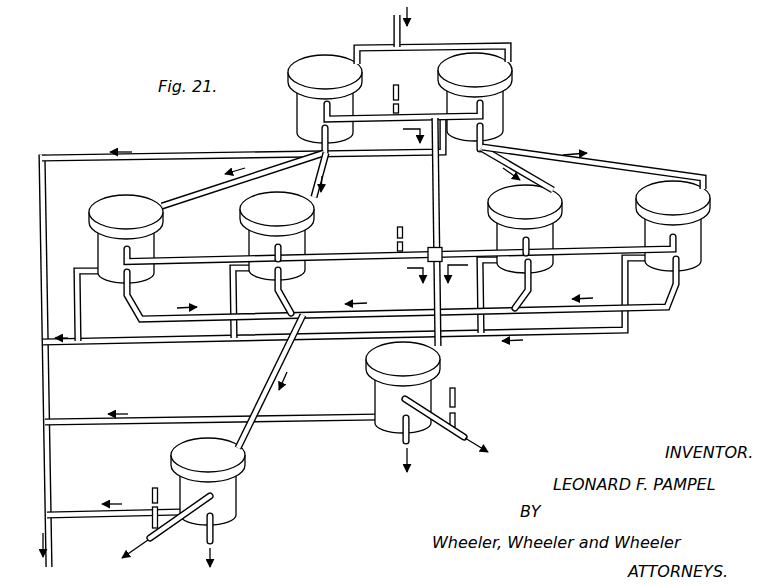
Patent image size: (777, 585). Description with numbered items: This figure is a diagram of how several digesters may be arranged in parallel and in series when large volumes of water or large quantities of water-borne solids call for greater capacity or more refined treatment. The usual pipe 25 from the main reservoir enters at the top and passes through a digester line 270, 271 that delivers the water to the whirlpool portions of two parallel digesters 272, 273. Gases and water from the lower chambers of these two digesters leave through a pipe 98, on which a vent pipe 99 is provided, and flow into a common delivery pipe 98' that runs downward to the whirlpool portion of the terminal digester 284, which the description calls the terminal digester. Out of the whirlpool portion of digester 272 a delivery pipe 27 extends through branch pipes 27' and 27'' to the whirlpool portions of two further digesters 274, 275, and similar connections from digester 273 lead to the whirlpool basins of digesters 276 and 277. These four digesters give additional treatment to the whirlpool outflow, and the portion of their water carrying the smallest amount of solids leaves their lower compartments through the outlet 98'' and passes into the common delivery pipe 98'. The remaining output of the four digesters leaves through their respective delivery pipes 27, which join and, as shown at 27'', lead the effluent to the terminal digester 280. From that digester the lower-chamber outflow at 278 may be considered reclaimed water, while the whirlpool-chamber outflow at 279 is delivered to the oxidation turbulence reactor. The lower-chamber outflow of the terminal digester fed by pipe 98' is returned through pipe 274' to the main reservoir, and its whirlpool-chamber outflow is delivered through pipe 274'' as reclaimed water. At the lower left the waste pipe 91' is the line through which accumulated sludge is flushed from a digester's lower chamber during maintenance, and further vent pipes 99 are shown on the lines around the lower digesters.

The pipe 25 is at (394, 31).
The digester line 270 is at (362, 46).
The digester line 271 is at (468, 44).
The digester 272 is at (300, 112).
The digester 273 is at (503, 101).
The pipe 98 is at (403, 106).
The vent pipe 99 is at (398, 89).
The delivery pipe 27 is at (419, 222).
The branch pipe 27' is at (382, 177).
The branch pipe 27'' is at (470, 297).
The common delivery pipe 98' is at (462, 238).
The digester 274 is at (145, 239).
The outlet 98'' is at (399, 238).
The digester 275 is at (306, 236).
The digester 276 is at (500, 239).
The digester 277 is at (703, 256).
The tank 284 is at (378, 400).
The pipe 274'' is at (370, 445).
The pipe 274' is at (446, 436).
The terminal digester 280 is at (232, 500).
The outflow 278 is at (150, 541).
The outflow 279 is at (217, 536).
The waste pipe 91' is at (70, 361).